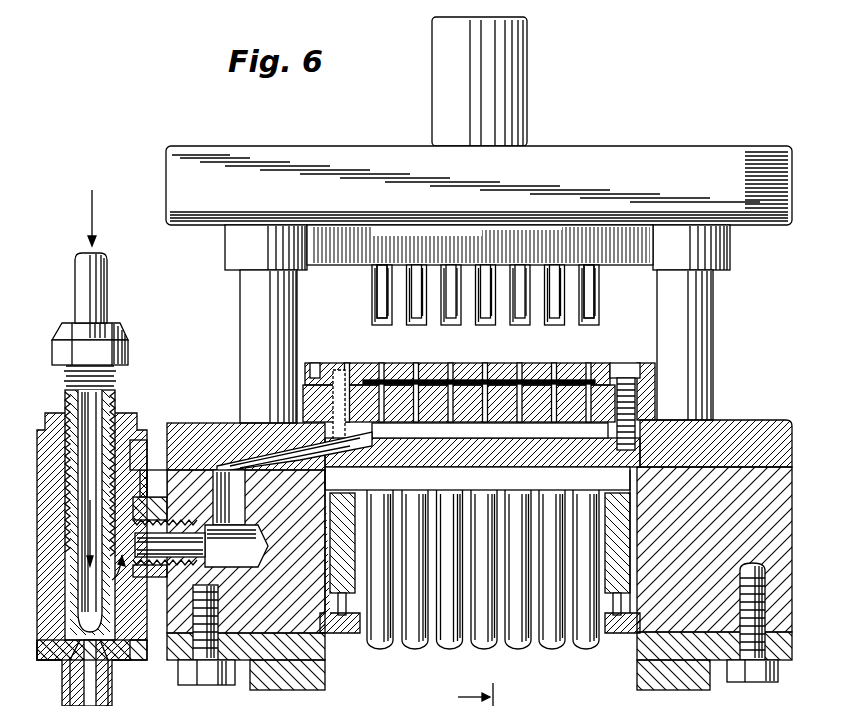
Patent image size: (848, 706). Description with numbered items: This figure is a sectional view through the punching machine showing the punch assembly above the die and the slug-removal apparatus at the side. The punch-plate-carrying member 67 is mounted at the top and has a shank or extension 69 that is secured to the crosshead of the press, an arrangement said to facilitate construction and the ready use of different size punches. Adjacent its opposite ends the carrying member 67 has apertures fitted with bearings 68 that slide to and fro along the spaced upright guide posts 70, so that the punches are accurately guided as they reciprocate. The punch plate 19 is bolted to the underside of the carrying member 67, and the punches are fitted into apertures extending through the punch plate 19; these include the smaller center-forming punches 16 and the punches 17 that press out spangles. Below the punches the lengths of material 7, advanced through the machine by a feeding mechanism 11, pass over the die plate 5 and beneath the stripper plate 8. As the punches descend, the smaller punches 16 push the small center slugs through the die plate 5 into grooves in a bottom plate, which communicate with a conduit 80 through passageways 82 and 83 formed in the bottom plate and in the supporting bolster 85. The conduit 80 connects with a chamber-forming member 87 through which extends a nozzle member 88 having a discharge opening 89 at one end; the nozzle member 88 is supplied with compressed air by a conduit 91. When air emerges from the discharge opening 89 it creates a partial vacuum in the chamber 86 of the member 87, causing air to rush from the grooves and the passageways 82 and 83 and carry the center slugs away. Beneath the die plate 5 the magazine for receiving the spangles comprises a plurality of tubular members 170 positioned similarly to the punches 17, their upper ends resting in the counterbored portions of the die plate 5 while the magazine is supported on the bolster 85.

The die plate 5 is at (642, 406).
The lengths of material 7 is at (562, 380).
The stripper plate 8 is at (466, 364).
The feeding mechanism 11 is at (560, 440).
The smaller punches 16 is at (378, 305).
The punches 17 is at (372, 290).
The punch plate 19 is at (326, 262).
The punch-plate-carrying member 67 is at (642, 128).
The bearings 68 is at (232, 246).
The shank or extension 69 is at (503, 56).
The upright guide posts 70 is at (240, 302).
The conduit 80 is at (200, 523).
The passageway 82 is at (232, 423).
The passageway 83 is at (232, 497).
The bolster 85 is at (180, 412).
The chamber 86 is at (153, 475).
The chamber-forming member 87 is at (118, 490).
The nozzle member 88 is at (116, 398).
The discharge opening 89 is at (66, 664).
The conduit 91 is at (80, 290).
The tubular members 170 is at (372, 641).